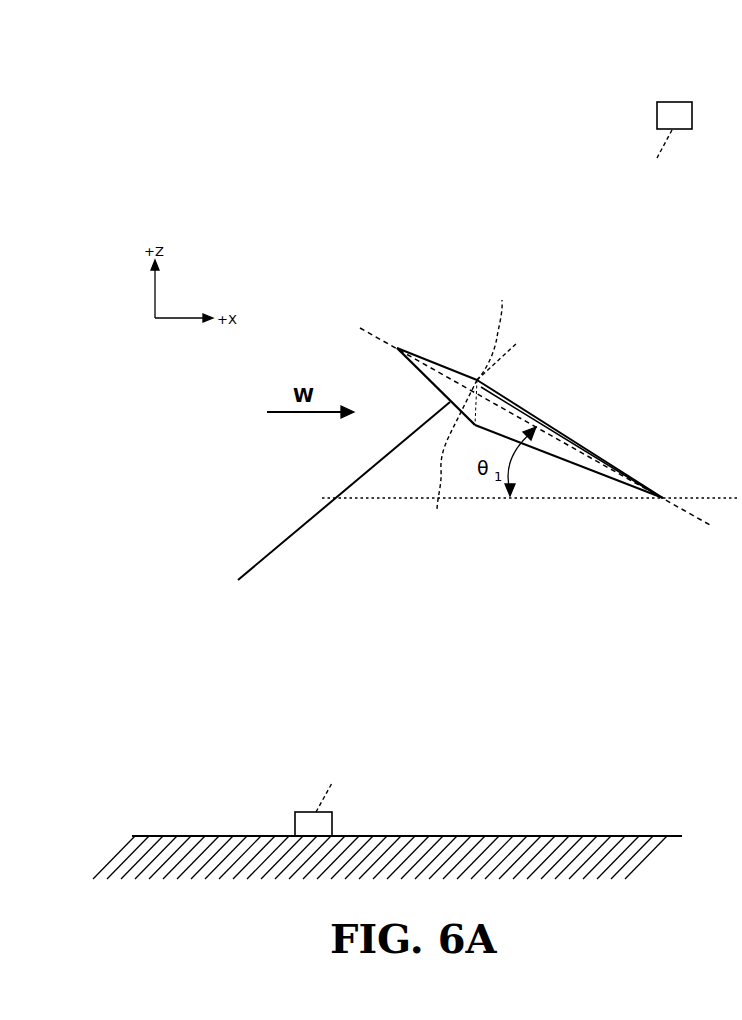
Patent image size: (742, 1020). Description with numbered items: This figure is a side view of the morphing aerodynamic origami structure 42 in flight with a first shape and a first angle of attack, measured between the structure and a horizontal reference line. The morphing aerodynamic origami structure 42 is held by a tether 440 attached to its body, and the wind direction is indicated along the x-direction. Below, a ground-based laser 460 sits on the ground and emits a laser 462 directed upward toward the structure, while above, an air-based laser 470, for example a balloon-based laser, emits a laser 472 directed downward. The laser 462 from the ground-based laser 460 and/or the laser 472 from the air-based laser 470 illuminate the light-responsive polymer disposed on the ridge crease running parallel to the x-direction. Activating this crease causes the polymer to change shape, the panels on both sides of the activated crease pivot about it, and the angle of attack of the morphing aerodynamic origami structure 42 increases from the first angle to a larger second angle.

The morphing aerodynamic origami structure 42 is at (530, 385).
The tether 440 is at (290, 535).
The ground-based laser 460 is at (332, 830).
The laser 462 is at (449, 460).
The air-based laser 470 is at (673, 102).
The laser 472 is at (498, 328).